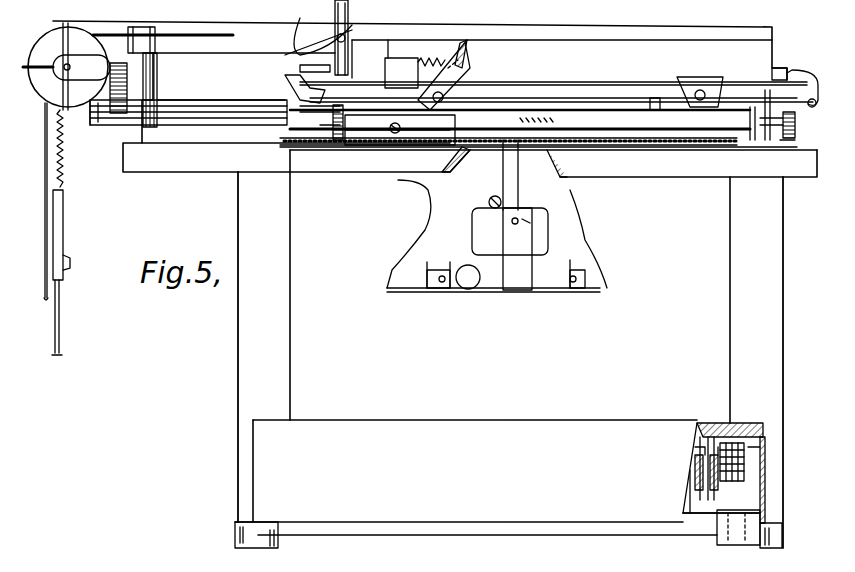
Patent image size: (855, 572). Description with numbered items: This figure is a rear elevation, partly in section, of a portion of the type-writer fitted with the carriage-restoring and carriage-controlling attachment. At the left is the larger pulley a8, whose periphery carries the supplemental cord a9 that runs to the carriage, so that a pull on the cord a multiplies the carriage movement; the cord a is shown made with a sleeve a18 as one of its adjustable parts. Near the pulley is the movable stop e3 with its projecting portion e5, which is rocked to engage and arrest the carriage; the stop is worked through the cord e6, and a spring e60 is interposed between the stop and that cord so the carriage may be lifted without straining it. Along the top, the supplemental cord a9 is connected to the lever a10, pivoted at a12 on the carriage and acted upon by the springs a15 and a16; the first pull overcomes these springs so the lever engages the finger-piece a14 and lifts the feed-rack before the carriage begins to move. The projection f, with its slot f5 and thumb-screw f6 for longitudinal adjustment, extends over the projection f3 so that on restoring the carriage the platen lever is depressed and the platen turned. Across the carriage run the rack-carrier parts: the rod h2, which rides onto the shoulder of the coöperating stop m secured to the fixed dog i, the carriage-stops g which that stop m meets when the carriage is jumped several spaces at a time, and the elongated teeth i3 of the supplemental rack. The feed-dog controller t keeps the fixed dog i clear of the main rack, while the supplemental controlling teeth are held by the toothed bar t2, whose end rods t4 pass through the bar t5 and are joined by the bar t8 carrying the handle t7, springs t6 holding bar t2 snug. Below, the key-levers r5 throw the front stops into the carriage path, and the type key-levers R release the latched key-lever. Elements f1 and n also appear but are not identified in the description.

The larger pulley a8 is at (50, 40).
The slot f5 is at (208, 34).
The projection f is at (270, 27).
The thumb-screw f6 is at (318, 27).
The post f1 is at (333, 37).
The projection f3 is at (360, 36).
The supplemental cord a9 is at (395, 40).
The lever a10 is at (467, 40).
The spring a16 is at (415, 63).
The spring a15 is at (458, 75).
The bar t8 is at (540, 82).
The handle t7 is at (566, 98).
The rod h2 is at (590, 140).
The carriage-stops g is at (635, 135).
The bracket n is at (800, 70).
The coöperating stop m is at (530, 110).
The projecting portion e5 is at (185, 101).
The finger-piece a14 is at (285, 80).
The rods t4 is at (333, 112).
The movable stop e3 is at (90, 110).
The cord a is at (45, 172).
The spring e60 is at (64, 168).
The springs t6 is at (315, 143).
The bar t5 is at (340, 145).
The bar t2 is at (358, 145).
The pivot a12 is at (422, 143).
The fixed dog i is at (503, 180).
The feed-dog controller t is at (555, 132).
The elongated teeth i3 is at (690, 146).
The sleeve a18 is at (62, 232).
The cord e6 is at (58, 357).
The key-levers r5 is at (735, 443).
The type key-levers R is at (688, 470).